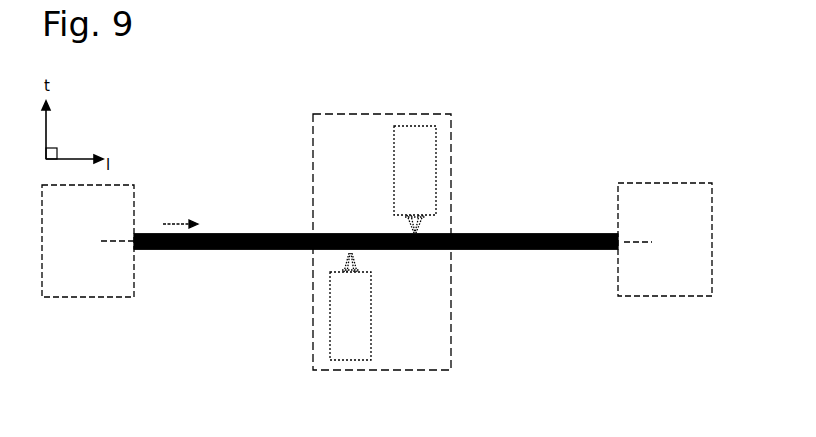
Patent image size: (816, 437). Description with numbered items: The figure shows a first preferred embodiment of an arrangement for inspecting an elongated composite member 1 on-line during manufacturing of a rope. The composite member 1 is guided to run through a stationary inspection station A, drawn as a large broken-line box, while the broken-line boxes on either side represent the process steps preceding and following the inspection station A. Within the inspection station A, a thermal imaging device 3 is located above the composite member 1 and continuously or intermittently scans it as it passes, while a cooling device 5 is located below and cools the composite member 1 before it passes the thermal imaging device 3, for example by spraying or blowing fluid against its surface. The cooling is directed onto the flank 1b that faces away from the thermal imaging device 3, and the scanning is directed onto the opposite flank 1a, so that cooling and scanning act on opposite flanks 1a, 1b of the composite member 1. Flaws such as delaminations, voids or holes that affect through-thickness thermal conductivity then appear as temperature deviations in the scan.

The elongated composite member 1 is at (500, 234).
The flank of the composite member 1a is at (289, 233).
The flank of the composite member 1b is at (210, 249).
The thermal imaging device 3 is at (405, 190).
The cooling device 5 is at (361, 330).
The stationary inspection station A is at (266, 79).